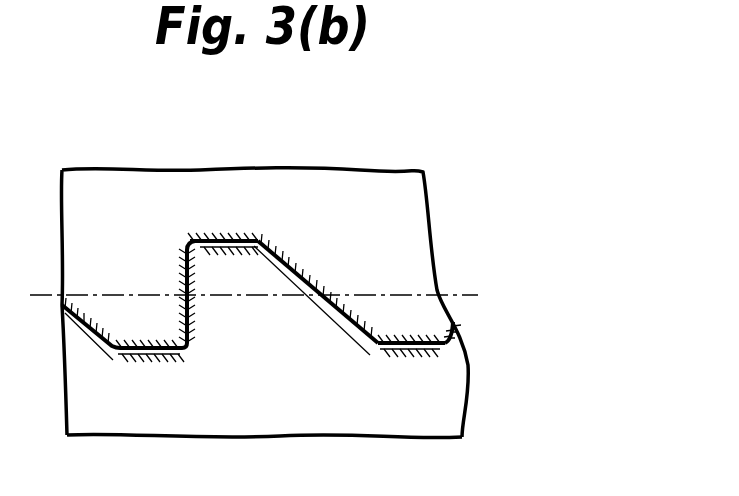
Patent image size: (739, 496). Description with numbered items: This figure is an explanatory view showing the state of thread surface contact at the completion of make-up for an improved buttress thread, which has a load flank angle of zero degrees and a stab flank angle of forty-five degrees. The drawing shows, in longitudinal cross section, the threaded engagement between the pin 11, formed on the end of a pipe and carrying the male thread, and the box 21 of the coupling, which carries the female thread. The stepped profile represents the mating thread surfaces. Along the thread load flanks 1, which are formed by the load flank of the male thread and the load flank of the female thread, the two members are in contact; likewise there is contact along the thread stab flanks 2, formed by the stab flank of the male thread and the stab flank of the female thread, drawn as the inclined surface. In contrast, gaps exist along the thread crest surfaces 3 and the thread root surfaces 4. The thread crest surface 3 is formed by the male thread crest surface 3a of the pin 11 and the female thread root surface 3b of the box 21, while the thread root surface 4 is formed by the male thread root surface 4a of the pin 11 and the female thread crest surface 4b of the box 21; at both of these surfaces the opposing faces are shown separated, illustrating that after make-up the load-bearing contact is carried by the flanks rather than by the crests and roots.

The box 21 is at (202, 182).
The pin 11 is at (175, 405).
The thread load flank 1 is at (186, 290).
The thread stab flank 2 is at (318, 284).
The thread crest surface 3 is at (244, 228).
The male thread crest surface 3a is at (227, 243).
The female thread root surface 3b is at (214, 230).
The thread root surface 4 is at (126, 355).
The male thread root surface 4a is at (397, 355).
The female thread crest surface 4b is at (395, 340).